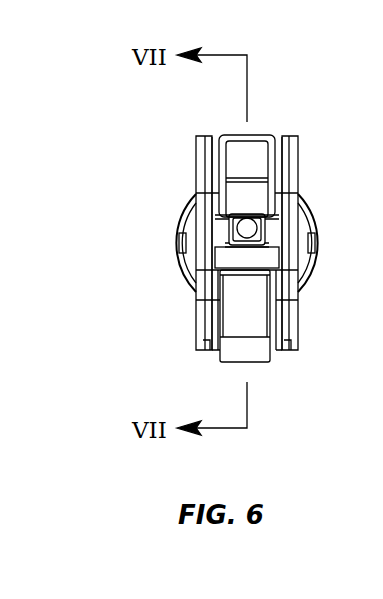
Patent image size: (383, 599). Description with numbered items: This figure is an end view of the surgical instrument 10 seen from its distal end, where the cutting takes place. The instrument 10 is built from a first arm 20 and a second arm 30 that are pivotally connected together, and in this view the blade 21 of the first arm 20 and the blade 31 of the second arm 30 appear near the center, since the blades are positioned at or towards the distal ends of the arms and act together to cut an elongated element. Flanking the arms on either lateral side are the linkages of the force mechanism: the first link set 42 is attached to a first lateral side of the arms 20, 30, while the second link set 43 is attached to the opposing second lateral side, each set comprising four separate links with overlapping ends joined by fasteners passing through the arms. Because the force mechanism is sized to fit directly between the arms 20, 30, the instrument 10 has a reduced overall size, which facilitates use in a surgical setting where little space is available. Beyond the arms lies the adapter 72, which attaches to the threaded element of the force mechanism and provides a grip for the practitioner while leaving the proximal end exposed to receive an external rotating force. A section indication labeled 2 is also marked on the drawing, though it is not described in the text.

The surgical instrument 10 is at (336, 346).
The section 2 is at (379, 155).
The first arm 20 is at (251, 160).
The blade 21 is at (250, 214).
The second arm 30 is at (236, 315).
The blade 31 is at (262, 246).
The first link set 42 is at (291, 327).
The second link set 43 is at (204, 204).
The adapter 72 is at (181, 262).